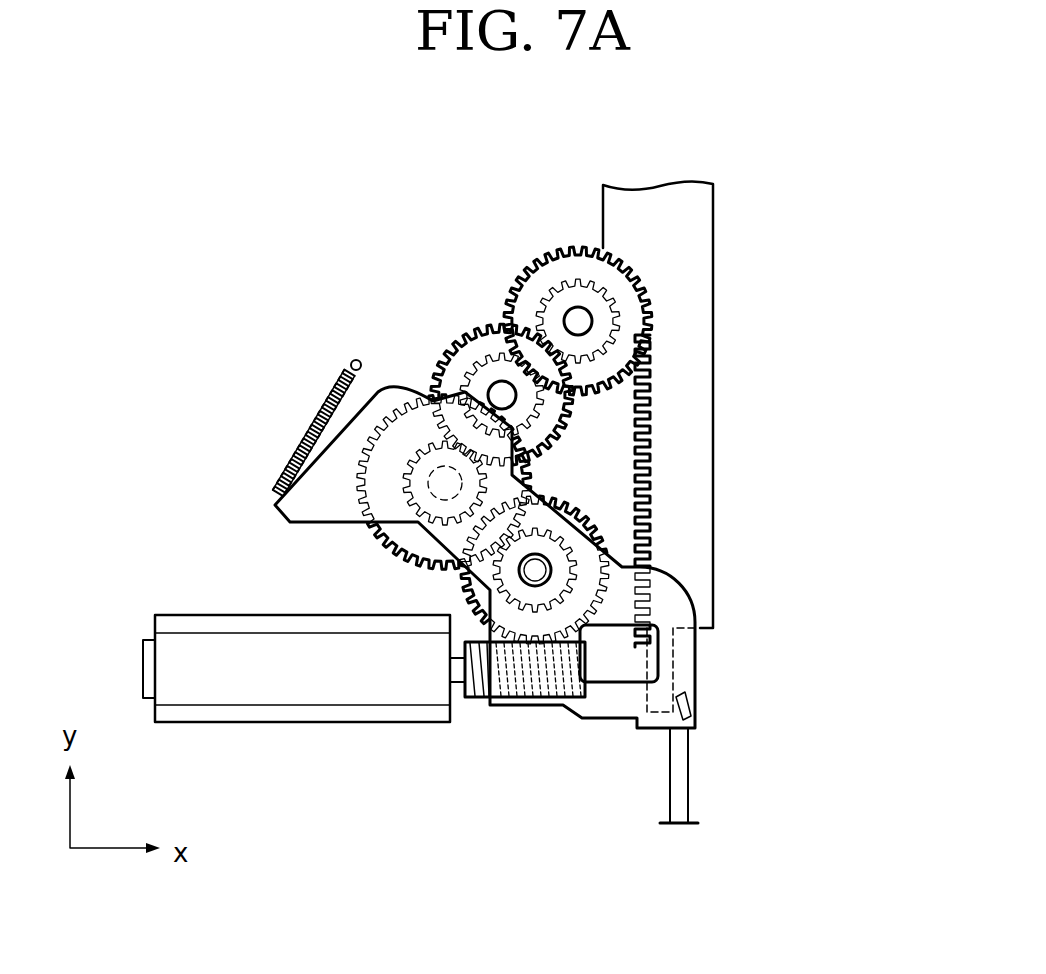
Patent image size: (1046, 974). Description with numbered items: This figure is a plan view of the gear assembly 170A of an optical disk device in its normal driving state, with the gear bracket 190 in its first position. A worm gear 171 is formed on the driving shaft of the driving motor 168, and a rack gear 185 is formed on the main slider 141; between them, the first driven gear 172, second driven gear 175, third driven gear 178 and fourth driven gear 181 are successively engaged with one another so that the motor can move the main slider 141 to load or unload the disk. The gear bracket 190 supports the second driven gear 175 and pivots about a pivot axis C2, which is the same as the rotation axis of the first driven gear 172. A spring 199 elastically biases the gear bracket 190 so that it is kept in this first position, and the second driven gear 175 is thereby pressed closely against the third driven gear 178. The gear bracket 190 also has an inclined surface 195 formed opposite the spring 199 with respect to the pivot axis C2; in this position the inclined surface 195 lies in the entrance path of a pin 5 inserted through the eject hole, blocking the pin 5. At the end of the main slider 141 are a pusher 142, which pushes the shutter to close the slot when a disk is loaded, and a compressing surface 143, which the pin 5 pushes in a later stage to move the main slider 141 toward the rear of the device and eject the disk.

The gear assembly 170A is at (268, 305).
The main slider 141 is at (708, 405).
The rack gear 185 is at (635, 461).
The gear bracket 190 is at (392, 400).
The spring 199 is at (322, 412).
The fourth driven gear 181 is at (524, 250).
The third driven gear 178 is at (450, 328).
The second driven gear 175 is at (358, 542).
The first driven gear 172 is at (452, 597).
The pivot axis C2 is at (535, 572).
The driving motor 168 is at (332, 718).
The worm gear 171 is at (477, 700).
The compressing surface 143 is at (700, 630).
The pusher 142 is at (658, 705).
The inclined surface 195 is at (692, 704).
The pin 5 is at (690, 790).